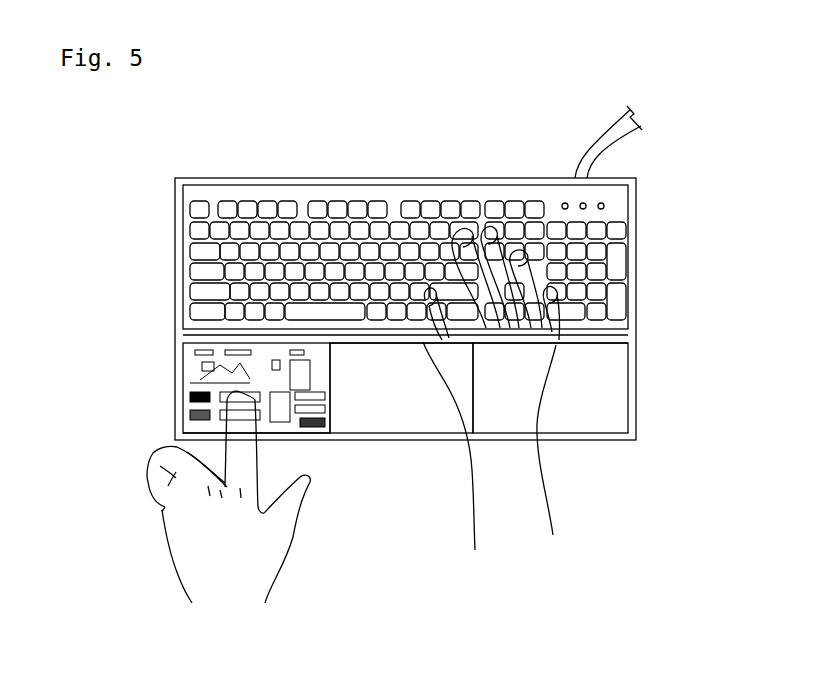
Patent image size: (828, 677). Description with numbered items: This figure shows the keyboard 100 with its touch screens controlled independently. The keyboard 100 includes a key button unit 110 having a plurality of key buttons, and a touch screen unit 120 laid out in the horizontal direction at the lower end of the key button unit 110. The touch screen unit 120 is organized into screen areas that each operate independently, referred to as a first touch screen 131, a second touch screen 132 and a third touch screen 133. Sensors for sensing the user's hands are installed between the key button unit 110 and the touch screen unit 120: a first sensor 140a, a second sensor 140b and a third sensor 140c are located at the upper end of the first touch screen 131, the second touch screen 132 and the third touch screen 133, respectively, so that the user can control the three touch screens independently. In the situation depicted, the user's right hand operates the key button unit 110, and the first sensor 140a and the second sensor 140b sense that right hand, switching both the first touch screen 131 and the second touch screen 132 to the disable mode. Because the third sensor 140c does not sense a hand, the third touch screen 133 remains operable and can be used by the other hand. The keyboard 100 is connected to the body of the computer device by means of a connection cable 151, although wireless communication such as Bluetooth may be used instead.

The keyboard 100 is at (155, 178).
The key button unit 110 is at (183, 262).
The touch screen unit 120 is at (183, 378).
The first touch screen 131 is at (566, 433).
The second touch screen 132 is at (402, 433).
The third touch screen 133 is at (329, 434).
The first sensor 140a is at (596, 343).
The second sensor 140b is at (397, 344).
The third sensor 140c is at (183, 335).
The connection cable 151 is at (583, 150).